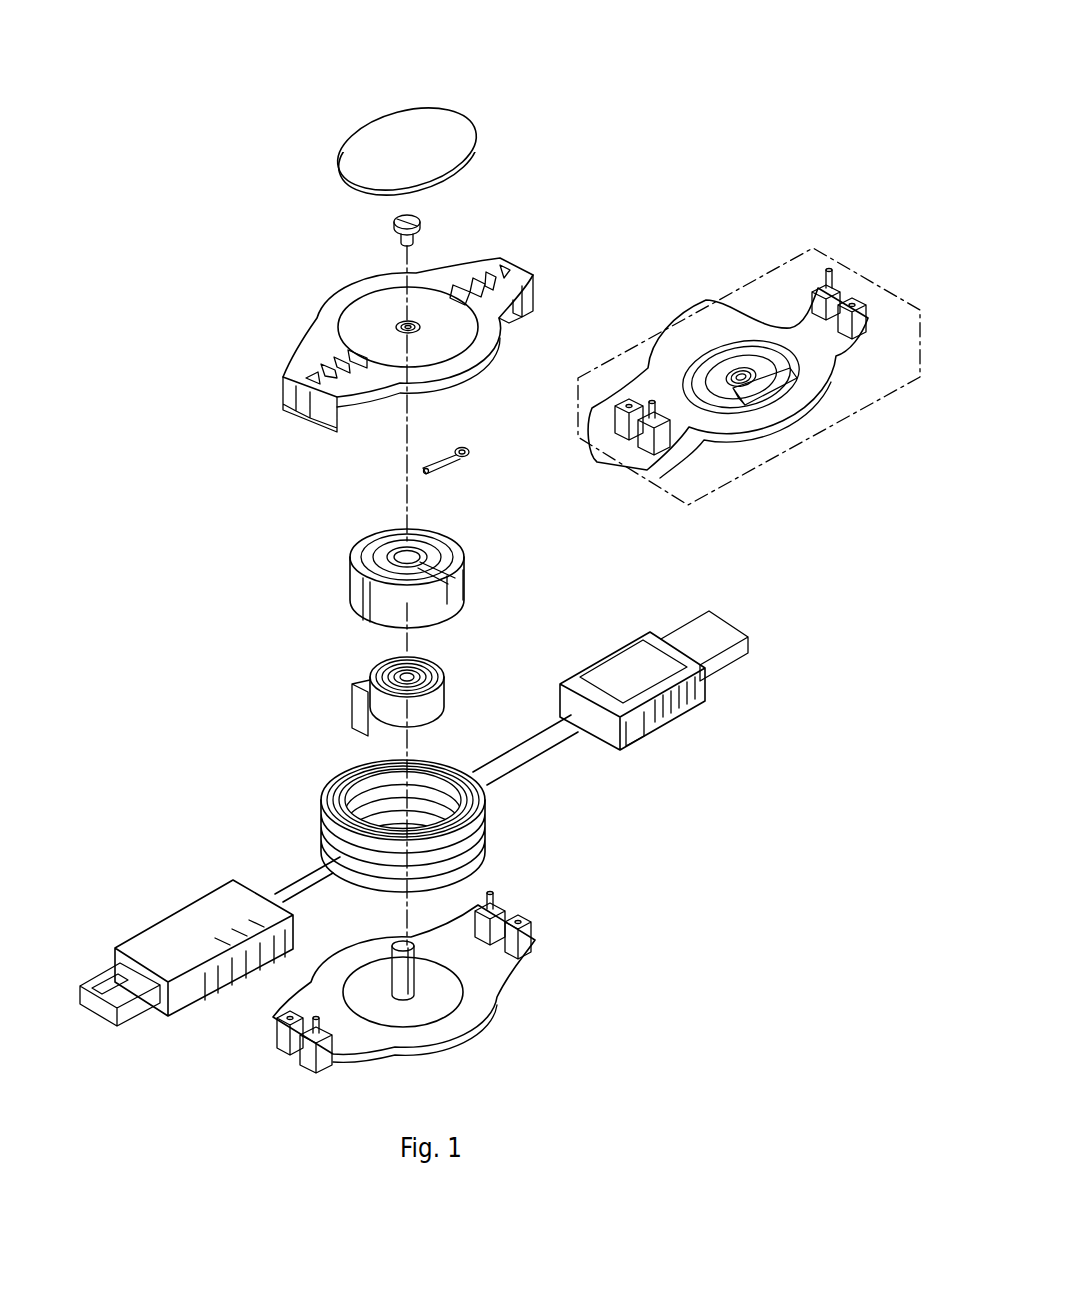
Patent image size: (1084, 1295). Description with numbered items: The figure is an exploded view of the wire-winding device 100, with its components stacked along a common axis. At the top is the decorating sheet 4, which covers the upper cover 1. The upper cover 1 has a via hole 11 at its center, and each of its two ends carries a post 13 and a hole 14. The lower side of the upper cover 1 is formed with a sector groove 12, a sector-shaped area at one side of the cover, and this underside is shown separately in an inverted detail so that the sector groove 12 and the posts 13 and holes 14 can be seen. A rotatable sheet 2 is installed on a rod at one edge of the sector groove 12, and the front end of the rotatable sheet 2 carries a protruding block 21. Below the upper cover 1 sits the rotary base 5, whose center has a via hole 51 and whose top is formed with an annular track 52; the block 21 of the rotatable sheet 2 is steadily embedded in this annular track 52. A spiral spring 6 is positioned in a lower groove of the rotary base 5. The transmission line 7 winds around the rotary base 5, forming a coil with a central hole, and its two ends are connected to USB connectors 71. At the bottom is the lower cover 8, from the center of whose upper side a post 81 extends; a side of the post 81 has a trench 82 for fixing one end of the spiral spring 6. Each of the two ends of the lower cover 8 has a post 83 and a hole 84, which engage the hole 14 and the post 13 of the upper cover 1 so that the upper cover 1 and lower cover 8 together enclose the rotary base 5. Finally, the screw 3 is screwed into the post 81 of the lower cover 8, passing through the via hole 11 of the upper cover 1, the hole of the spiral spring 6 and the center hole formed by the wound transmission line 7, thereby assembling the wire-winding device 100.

The wire-winding device 100 is at (573, 90).
The upper cover 1 is at (510, 257).
The via hole 11 is at (400, 322).
The sector groove 12 is at (775, 393).
The post 13 is at (298, 423).
The hole 14 is at (853, 305).
The rotatable sheet 2 is at (481, 457).
The block 21 is at (428, 475).
The screw 3 is at (392, 230).
The decorating sheet 4 is at (372, 132).
The rotary base 5 is at (452, 533).
The via hole 51 is at (383, 533).
The annular track 52 is at (363, 560).
The spiral spring 6 is at (372, 664).
The transmission line 7 is at (537, 758).
The USB connector 71 is at (702, 632).
The lower cover 8 is at (500, 1016).
The post 81 is at (392, 965).
The trench 82 is at (413, 990).
The post 83 is at (493, 893).
The hole 84 is at (522, 914).